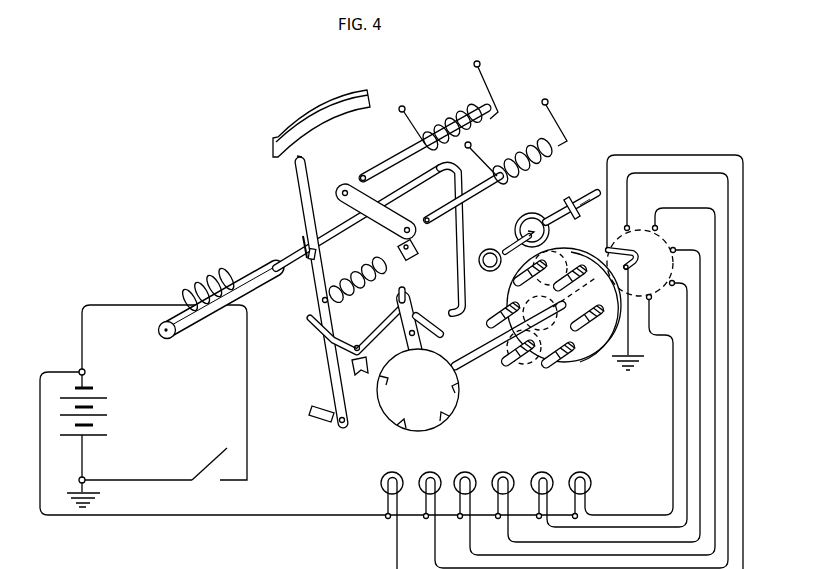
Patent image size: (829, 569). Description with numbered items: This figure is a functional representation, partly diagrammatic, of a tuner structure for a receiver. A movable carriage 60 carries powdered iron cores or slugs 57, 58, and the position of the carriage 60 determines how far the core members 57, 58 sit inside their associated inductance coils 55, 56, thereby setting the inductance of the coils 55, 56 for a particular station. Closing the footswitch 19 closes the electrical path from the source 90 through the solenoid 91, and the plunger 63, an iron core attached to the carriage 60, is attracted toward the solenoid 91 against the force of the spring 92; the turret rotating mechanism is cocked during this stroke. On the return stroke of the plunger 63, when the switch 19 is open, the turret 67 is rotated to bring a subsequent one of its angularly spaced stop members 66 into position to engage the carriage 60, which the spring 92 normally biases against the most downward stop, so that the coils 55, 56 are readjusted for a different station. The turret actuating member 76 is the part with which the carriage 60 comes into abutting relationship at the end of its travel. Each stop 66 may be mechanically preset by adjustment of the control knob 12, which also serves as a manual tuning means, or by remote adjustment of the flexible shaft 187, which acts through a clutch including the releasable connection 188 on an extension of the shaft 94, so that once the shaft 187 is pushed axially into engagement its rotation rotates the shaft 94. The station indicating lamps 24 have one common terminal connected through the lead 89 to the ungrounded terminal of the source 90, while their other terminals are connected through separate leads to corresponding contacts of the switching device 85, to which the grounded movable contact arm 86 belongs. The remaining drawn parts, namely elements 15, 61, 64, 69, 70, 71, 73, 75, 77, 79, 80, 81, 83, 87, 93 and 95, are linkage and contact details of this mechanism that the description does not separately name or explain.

The control knob 12 is at (494, 256).
The lever 15 is at (292, 177).
The footswitch 19 is at (207, 465).
The station indicating lamps 24 is at (437, 472).
The inductance coil 55 is at (453, 117).
The inductance coil 56 is at (523, 158).
The core member 57 is at (384, 165).
The core member 58 is at (480, 198).
The carriage 60 is at (393, 218).
The link rod 61 is at (333, 235).
The plunger 63 is at (247, 270).
The bar 64 is at (458, 286).
The stop members 66 is at (499, 300).
The turret 67 is at (568, 362).
The shaft 69 is at (477, 356).
The cam 70 is at (397, 420).
The pawl 71 is at (423, 343).
The link 73 is at (410, 320).
The lever 75 is at (378, 336).
The turret actuating member 76 is at (318, 286).
The stop 77 is at (357, 372).
The tab 79 is at (318, 420).
The contact portion 80 is at (303, 235).
The stud 81 is at (316, 254).
The arcuate guide 83 is at (279, 143).
The switching device 85 is at (668, 242).
The movable contact arm 86 is at (628, 250).
The contacts 87 is at (654, 225).
The lead 89 is at (318, 513).
The source 90 is at (103, 408).
The solenoid 91 is at (207, 290).
The spring 92 is at (362, 290).
The shaft 93 is at (548, 218).
The shaft 94 is at (516, 235).
The collar 95 is at (501, 260).
The flexible shaft 187 is at (578, 201).
The releasable connection 188 is at (576, 216).